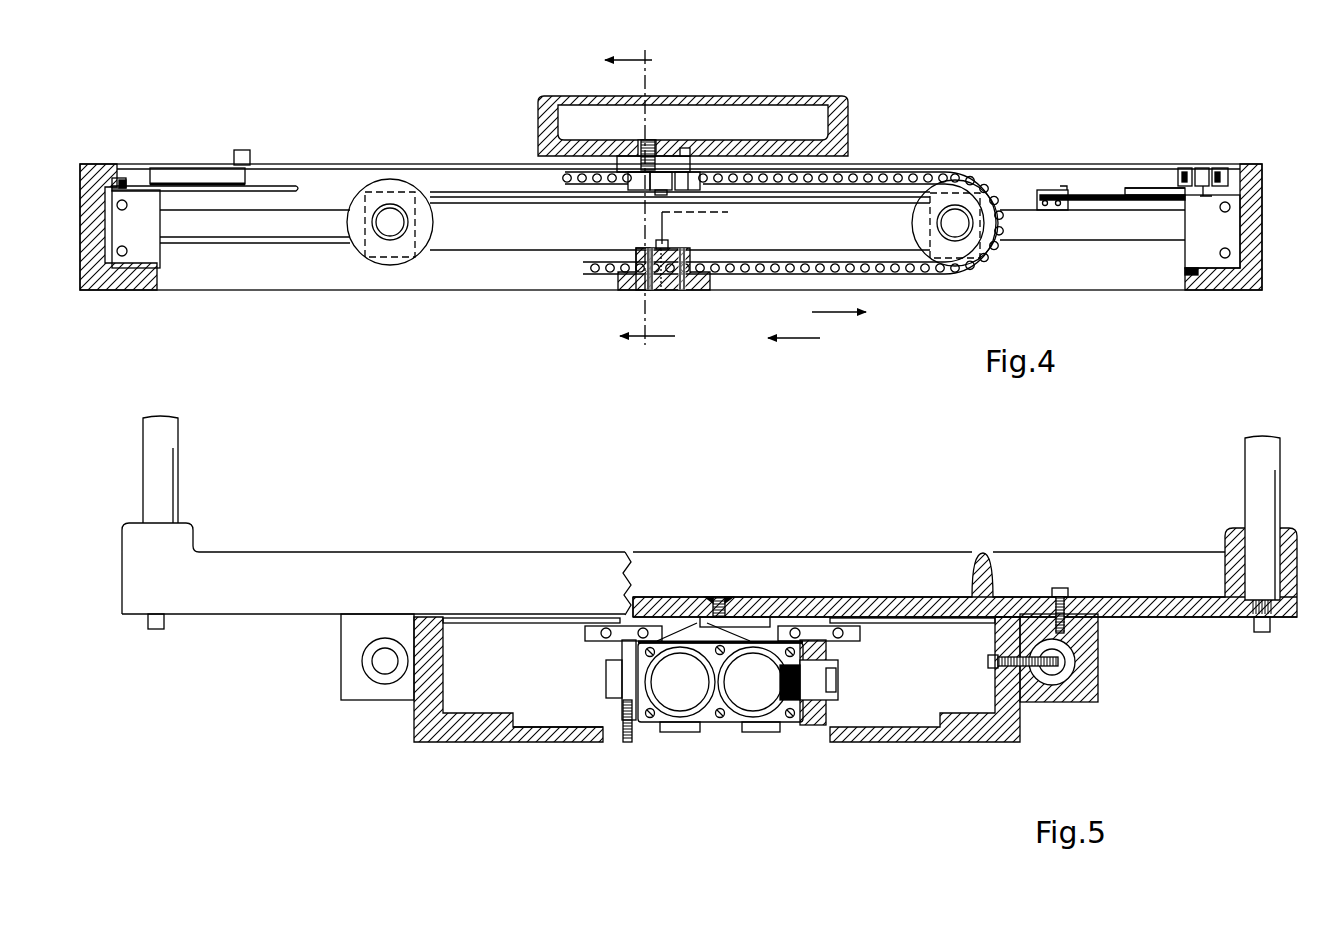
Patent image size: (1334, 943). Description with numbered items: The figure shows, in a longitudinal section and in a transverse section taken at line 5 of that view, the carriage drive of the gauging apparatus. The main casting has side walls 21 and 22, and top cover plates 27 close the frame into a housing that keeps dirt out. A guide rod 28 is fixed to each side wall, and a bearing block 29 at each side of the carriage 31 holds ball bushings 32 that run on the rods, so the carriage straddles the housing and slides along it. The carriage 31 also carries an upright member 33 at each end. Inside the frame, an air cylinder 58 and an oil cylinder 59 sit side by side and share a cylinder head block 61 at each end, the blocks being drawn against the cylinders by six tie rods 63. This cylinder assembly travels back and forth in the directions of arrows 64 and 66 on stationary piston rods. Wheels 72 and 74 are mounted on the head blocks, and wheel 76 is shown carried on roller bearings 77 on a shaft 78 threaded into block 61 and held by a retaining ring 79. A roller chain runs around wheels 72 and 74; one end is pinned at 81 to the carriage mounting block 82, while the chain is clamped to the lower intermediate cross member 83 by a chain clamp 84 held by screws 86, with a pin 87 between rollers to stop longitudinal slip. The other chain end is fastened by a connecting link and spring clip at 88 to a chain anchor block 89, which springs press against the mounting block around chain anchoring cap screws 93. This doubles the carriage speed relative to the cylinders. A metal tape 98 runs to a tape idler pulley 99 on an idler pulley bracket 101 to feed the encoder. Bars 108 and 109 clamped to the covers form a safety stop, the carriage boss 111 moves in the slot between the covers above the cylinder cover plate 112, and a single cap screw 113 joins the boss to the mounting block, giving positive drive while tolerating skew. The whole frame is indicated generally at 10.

In FIG. 4, the section line 5— 5 is at (640, 201).
In FIG. 4, the frame 10 is at (1085, 165).
In FIG. 5, the side wall 21 is at (425, 732).
In FIG. 5, the side wall 22 is at (1013, 712).
In FIG. 4, the top cover plates 27 is at (990, 168).
In FIG. 5, the top cover plates 27 is at (518, 618).
In FIG. 5, the guide rod 28 is at (382, 658).
In FIG. 5, the bearing block 29 is at (350, 684).
In FIG. 4, the carriage 31 is at (840, 126).
In FIG. 5, the carriage 31 is at (926, 520).
In FIG. 5, the ball bushings 32 is at (393, 680).
In FIG. 5, the guide post 33 is at (160, 467).
In FIG. 5, the air cylinder 58 is at (660, 726).
In FIG. 5, the oil cylinder 59 is at (760, 724).
In FIG. 5, the cylinder head block 61 is at (733, 725).
In FIG. 5, the tie rods 63 is at (656, 646).
In FIG. 4, the arrow 64 is at (834, 313).
In FIG. 4, the arrow 66 is at (808, 339).
In FIG. 4, the wheel 72 is at (955, 250).
In FIG. 4, the wheel 74 is at (378, 247).
In FIG. 5, the wheel 74 is at (626, 659).
In FIG. 5, the wheel 76 is at (826, 722).
In FIG. 5, the roller bearings 77 is at (834, 700).
In FIG. 5, the shaft 78 is at (838, 683).
In FIG. 5, the retaining ring 79 is at (840, 668).
In FIG. 4, the chain pin connection 81 is at (630, 188).
In FIG. 4, the carriage mounting block 82 is at (662, 190).
In FIG. 5, the carriage mounting block 82 is at (740, 624).
In FIG. 4, the lower intermediate cross member 83 is at (625, 281).
In FIG. 5, the lower intermediate cross member 83 is at (555, 733).
In FIG. 4, the chain clamp 84 is at (636, 252).
In FIG. 4, the screws 86 is at (668, 244).
In FIG. 5, the screws 86 is at (626, 740).
In FIG. 4, the pin 87 is at (640, 291).
In FIG. 4, the connecting link and spring clip 88 is at (722, 176).
In FIG. 4, the chain anchor block 89 is at (690, 175).
In FIG. 5, the chain anchoring cap screw 93 is at (608, 628).
In FIG. 4, the metal tape 98 is at (210, 172).
In FIG. 4, the tape idler pulley 99 is at (1202, 172).
In FIG. 4, the idler pulley bracket 101 is at (1258, 187).
In FIG. 4, the bar 108 is at (240, 150).
In FIG. 4, the bar 109 is at (250, 170).
In FIG. 4, the boss 111 is at (625, 160).
In FIG. 5, the boss 111 is at (712, 596).
In FIG. 4, the cylinder cover plate 112 is at (1142, 192).
In FIG. 5, the cylinder cover plate 112 is at (770, 640).
In FIG. 4, the cap screw 113 is at (640, 150).